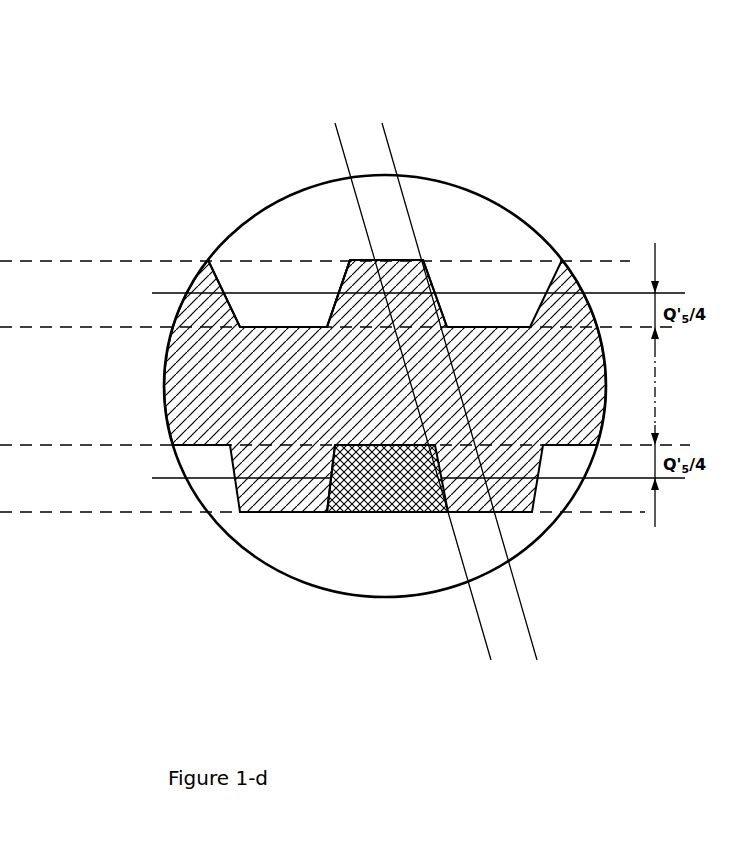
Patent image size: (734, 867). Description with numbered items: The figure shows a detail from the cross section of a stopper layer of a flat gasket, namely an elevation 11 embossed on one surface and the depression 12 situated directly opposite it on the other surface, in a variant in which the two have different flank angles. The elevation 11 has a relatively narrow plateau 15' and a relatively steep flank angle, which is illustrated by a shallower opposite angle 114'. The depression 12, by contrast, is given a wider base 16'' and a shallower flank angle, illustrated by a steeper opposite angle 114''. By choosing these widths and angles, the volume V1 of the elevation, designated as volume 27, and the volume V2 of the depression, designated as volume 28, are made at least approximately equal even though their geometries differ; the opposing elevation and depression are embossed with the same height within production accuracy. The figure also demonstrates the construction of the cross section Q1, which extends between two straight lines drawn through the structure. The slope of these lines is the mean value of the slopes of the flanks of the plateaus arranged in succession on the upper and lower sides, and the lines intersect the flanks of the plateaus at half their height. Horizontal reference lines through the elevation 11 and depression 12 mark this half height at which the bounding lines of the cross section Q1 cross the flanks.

The elevation 11 is at (428, 260).
The depression 12 is at (315, 512).
The plateau 15' is at (423, 181).
The base 16'' is at (394, 602).
The opposite angle 114' is at (244, 215).
The opposite angle 114'' is at (295, 602).
The volume V1 is at (350, 260).
The volume V2 is at (397, 512).
The cross section Q1 is at (440, 143).
The volume V1 27 is at (245, 98).
The volume V2 28 is at (365, 695).